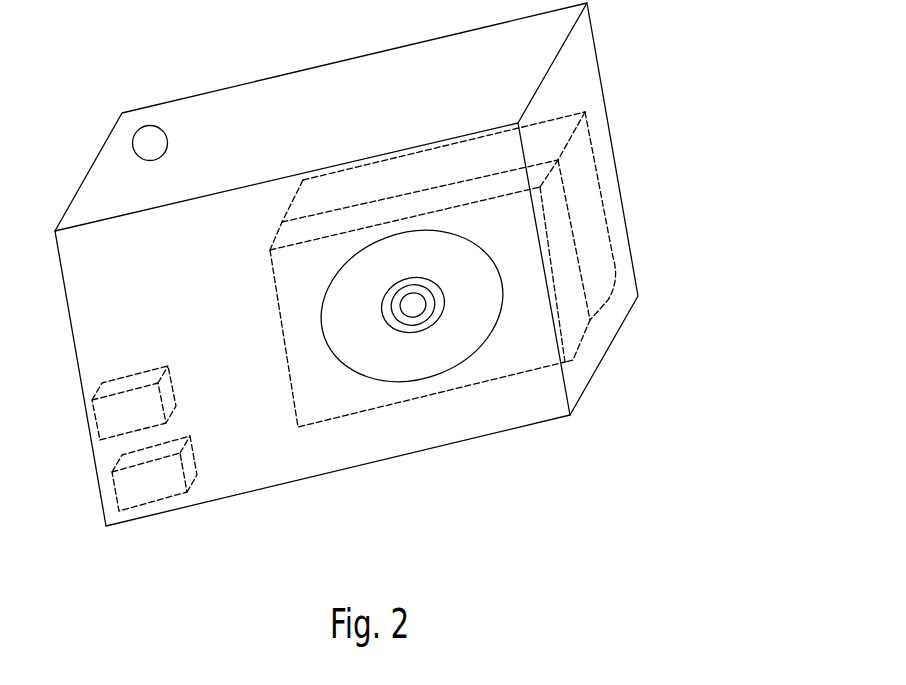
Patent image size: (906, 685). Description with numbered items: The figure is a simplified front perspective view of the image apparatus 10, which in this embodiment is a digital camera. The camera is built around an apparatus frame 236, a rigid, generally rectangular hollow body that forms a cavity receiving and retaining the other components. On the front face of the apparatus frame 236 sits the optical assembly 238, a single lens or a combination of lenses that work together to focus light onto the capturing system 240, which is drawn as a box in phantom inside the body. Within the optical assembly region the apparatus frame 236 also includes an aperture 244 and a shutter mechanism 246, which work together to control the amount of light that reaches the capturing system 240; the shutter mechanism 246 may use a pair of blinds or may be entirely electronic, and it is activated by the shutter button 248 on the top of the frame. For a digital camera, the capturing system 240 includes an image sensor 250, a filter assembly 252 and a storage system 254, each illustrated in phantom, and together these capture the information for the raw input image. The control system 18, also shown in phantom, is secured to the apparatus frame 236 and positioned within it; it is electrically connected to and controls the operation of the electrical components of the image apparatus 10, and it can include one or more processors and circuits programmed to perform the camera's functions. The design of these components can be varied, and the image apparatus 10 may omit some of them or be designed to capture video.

The image apparatus 10 is at (128, 107).
The control system 18 is at (98, 383).
The apparatus frame 236 is at (267, 100).
The optical assembly 238 is at (403, 313).
The capturing system 240 is at (718, 235).
The aperture 244 is at (435, 308).
The shutter mechanism 246 is at (415, 310).
The shutter button 248 is at (148, 135).
The image sensor 250 is at (598, 267).
The filter assembly 252 is at (580, 324).
The storage system 254 is at (132, 493).